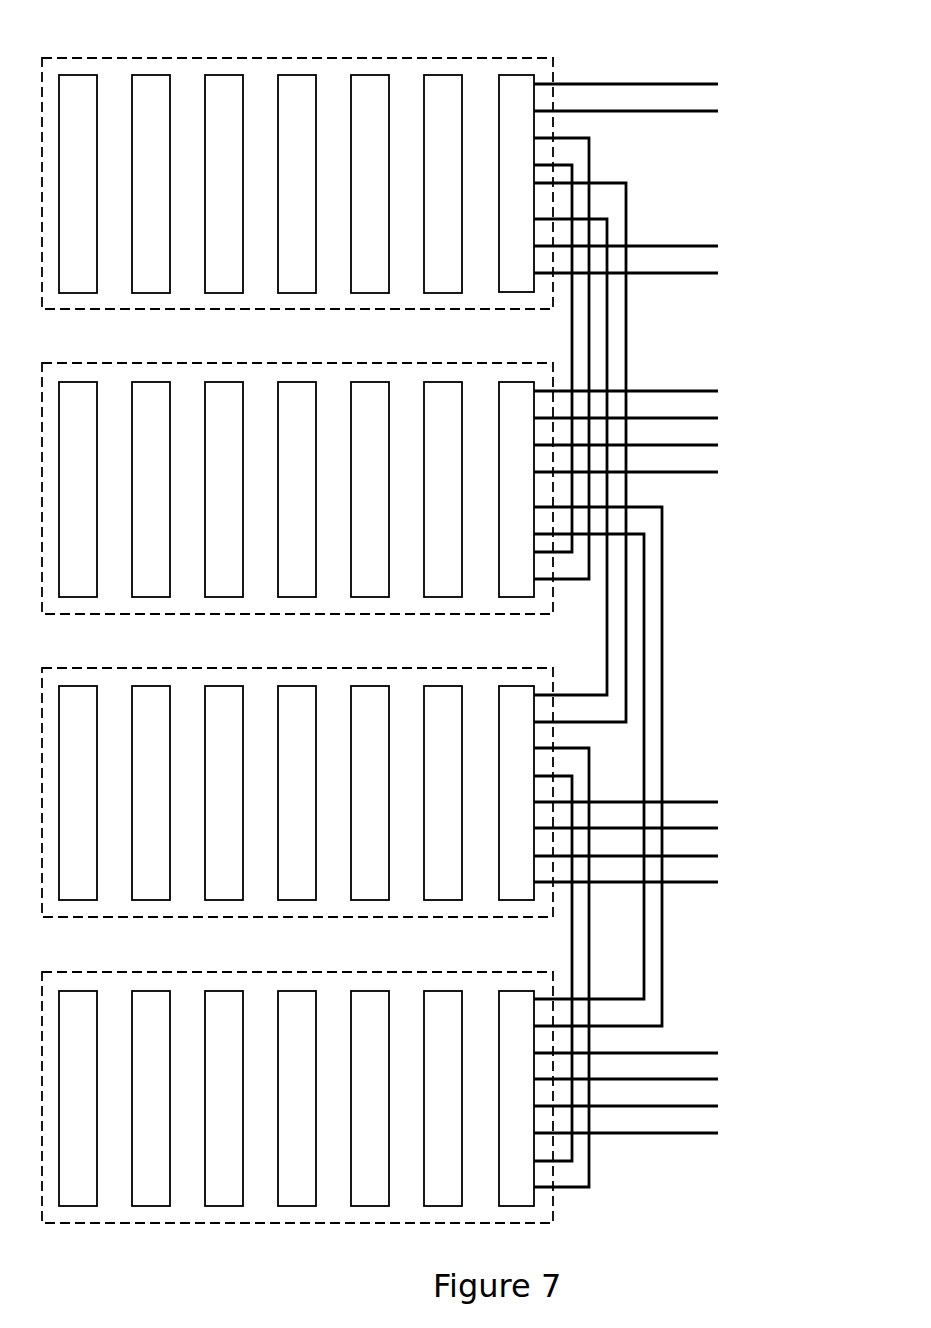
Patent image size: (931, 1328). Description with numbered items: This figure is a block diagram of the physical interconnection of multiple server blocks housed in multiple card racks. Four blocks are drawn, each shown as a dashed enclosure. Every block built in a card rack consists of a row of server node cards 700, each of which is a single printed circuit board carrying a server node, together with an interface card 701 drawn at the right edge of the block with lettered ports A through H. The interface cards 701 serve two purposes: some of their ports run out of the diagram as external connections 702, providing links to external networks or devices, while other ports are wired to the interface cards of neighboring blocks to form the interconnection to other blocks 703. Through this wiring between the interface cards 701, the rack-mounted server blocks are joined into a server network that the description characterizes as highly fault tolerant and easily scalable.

The server node cards 700 is at (148, 66).
The interface card 701 is at (556, 44).
The external routing wires 702 is at (724, 92).
The interconnection to other blocks 703 is at (720, 194).